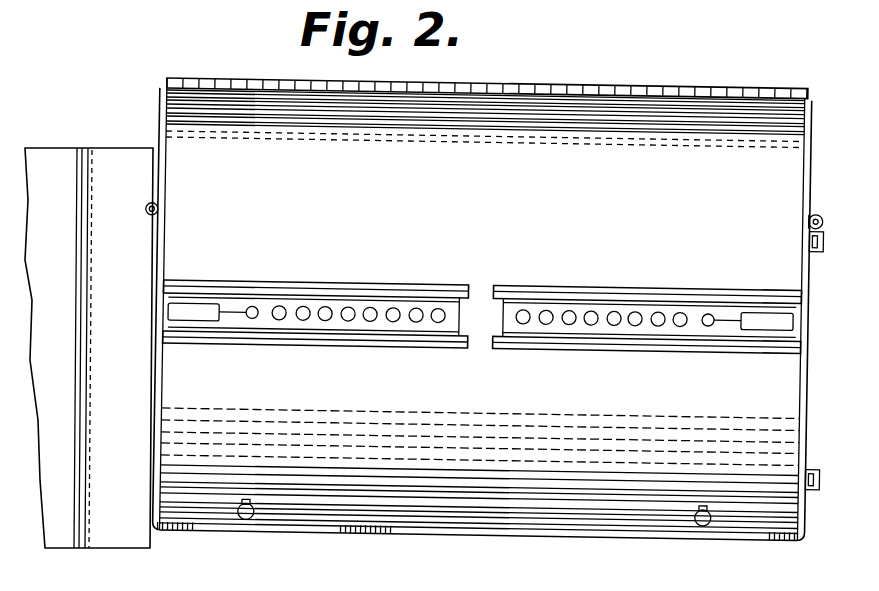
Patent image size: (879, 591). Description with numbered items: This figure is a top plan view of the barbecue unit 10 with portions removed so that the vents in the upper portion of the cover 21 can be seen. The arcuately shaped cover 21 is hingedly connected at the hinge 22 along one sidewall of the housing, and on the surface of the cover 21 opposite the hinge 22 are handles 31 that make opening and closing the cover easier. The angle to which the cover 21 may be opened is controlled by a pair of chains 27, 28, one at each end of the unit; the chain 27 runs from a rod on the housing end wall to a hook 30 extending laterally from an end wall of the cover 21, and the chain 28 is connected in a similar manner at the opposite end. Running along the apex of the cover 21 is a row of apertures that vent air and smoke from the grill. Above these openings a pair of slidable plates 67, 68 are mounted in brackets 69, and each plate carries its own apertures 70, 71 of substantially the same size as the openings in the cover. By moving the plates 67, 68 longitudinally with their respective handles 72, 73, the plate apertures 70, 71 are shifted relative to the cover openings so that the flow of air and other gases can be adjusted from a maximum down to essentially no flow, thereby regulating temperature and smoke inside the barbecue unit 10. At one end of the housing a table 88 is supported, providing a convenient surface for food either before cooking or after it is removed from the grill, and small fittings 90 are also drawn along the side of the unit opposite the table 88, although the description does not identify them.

The barbecue unit 10 is at (699, 77).
The cover 21 is at (603, 118).
The hinge 22 is at (215, 82).
The chain 27 is at (823, 206).
The chain 28 is at (150, 206).
The hook 30 is at (147, 211).
The handle 31 is at (247, 519).
The slidable plate 67 is at (338, 305).
The slidable plate 68 is at (628, 307).
The bracket 69 is at (320, 345).
The aperture 70 is at (440, 305).
The aperture 71 is at (596, 306).
The handle 72 is at (190, 305).
The handle 73 is at (762, 310).
The table 88 is at (63, 160).
The side bracket 90 is at (828, 247).